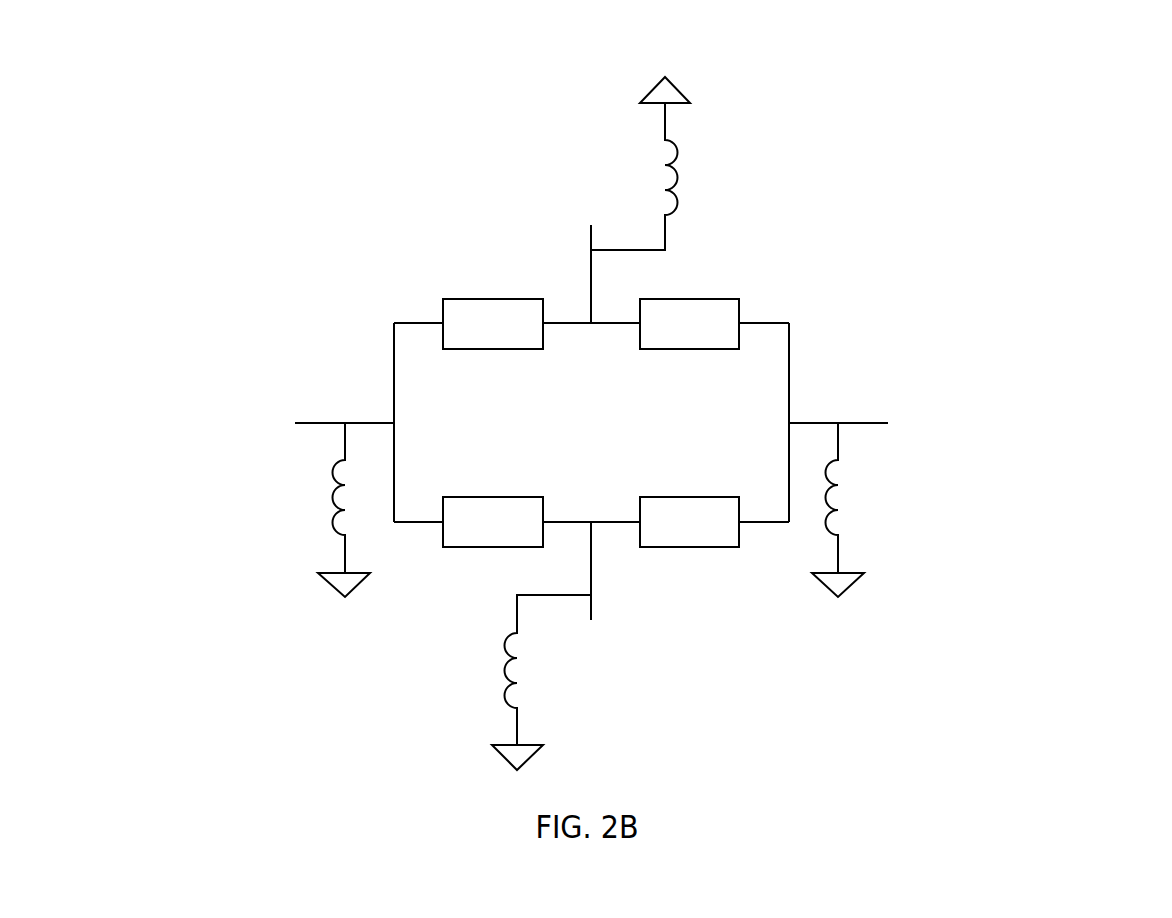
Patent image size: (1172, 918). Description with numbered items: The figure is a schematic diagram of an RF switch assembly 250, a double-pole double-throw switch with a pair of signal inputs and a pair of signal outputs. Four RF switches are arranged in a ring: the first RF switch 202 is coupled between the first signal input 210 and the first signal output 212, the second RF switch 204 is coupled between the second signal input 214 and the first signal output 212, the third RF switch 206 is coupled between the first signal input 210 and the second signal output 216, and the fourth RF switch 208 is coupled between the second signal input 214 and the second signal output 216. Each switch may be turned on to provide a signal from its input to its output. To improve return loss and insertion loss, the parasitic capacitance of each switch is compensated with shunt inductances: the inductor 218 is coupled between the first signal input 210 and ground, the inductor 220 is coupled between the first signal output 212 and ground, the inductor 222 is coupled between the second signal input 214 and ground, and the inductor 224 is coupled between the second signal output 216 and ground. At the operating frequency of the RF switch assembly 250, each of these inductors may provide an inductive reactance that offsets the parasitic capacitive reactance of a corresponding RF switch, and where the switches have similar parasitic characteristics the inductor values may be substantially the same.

The first RF switch 202 is at (493, 308).
The second RF switch 204 is at (689, 308).
The third RF switch 206 is at (493, 541).
The fourth RF switch 208 is at (689, 541).
The first signal input 210 is at (276, 421).
The first signal output 212 is at (590, 235).
The second signal input 214 is at (901, 421).
The second signal output 216 is at (590, 609).
The inductor 218 is at (323, 510).
The inductor 220 is at (667, 163).
The inductor 222 is at (858, 510).
The inductor 224 is at (516, 682).
The RF switch assembly 250 is at (1013, 110).